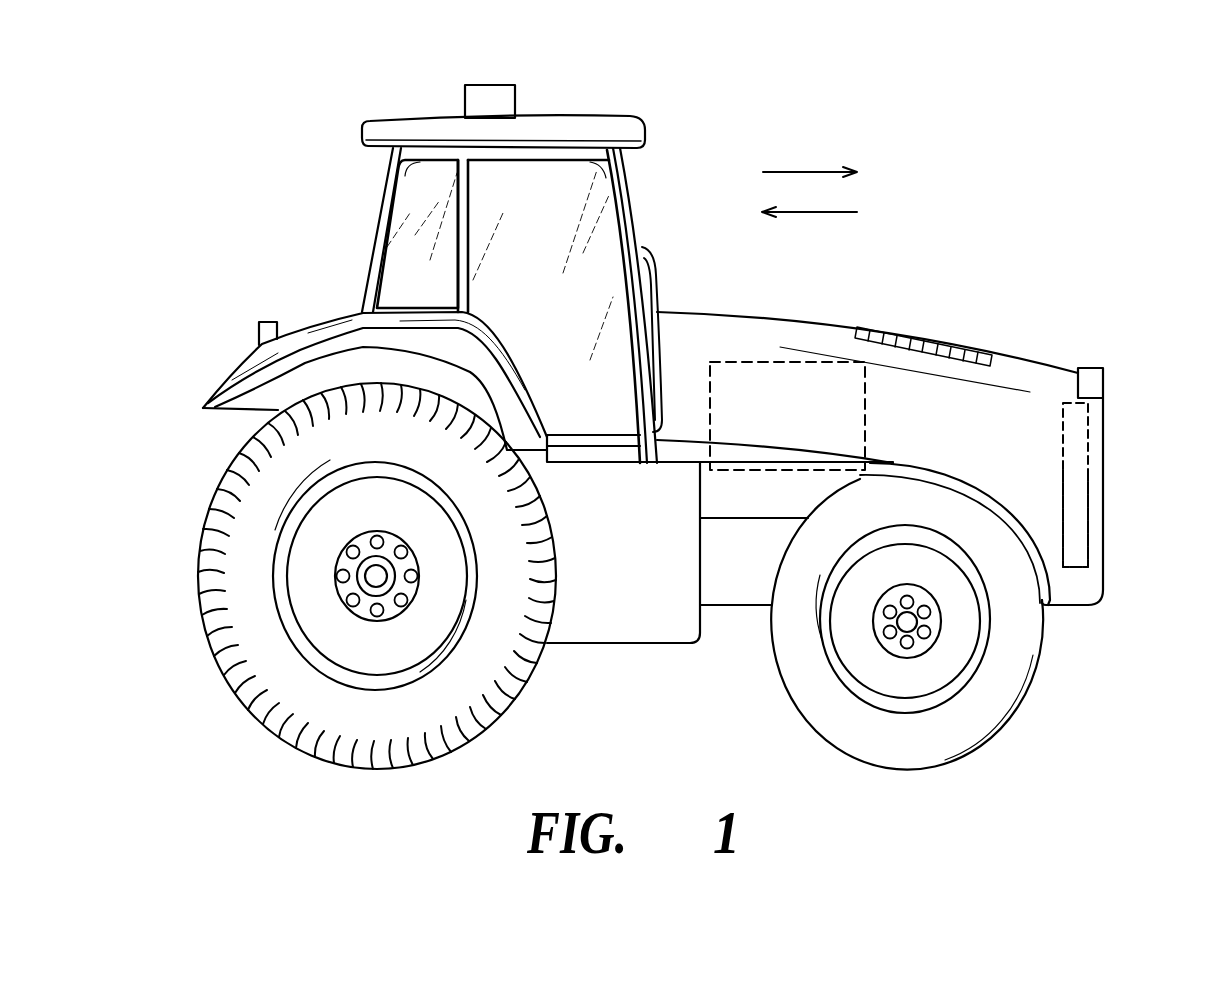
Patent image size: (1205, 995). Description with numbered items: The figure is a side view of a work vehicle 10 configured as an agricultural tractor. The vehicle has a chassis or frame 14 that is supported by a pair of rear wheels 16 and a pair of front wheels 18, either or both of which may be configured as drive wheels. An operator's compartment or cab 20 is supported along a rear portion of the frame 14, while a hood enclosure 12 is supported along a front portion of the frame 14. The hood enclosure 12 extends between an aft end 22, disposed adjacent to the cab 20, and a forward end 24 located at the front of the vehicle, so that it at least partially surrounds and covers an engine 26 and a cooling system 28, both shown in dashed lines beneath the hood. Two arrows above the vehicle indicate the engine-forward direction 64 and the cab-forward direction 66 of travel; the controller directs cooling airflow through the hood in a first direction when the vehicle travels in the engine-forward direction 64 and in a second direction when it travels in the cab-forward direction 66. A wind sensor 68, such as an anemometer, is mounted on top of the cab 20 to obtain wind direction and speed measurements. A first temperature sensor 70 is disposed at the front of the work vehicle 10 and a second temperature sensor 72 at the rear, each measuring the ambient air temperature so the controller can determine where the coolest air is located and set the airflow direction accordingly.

The work vehicle 10 is at (653, 376).
The hood enclosure 12 is at (1007, 368).
The frame 14 is at (648, 647).
The rear wheels 16 is at (198, 606).
The front wheels 18 is at (1030, 697).
The cab 20 is at (405, 257).
The aft end 22 is at (660, 305).
The forward end 24 is at (1103, 455).
The engine 26 is at (742, 362).
The cooling system 28 is at (1088, 530).
The engine-forward direction 64 is at (790, 172).
The cab-forward direction 66 is at (832, 213).
The wind sensor 68 is at (483, 85).
The first temperature sensor 70 is at (1096, 368).
The second temperature sensor 72 is at (264, 322).